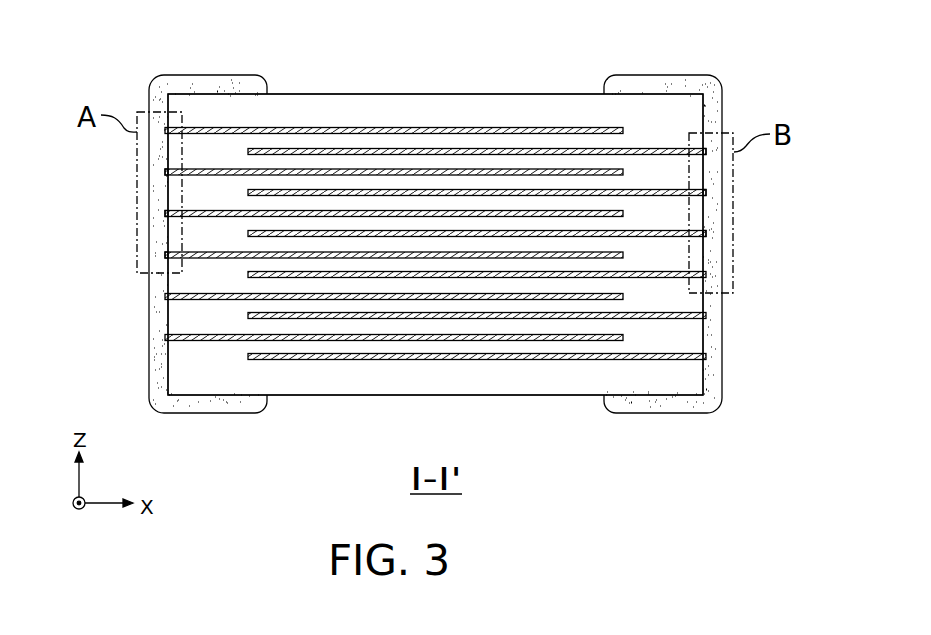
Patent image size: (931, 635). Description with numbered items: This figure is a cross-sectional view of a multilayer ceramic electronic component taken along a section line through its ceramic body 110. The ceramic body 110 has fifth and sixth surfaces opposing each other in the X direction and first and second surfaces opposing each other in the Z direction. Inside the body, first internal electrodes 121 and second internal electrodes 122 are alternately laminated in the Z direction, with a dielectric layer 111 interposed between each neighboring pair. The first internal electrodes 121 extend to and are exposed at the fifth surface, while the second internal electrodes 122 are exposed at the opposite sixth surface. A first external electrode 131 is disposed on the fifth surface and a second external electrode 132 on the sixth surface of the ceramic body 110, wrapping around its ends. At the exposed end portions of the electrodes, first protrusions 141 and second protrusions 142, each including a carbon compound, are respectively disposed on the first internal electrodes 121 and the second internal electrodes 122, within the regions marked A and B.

The ceramic body 110 is at (437, 93).
The dielectric layer 111 is at (503, 378).
The first internal electrode 121 is at (340, 342).
The second internal electrode 122 is at (391, 360).
The first external electrode 131 is at (209, 78).
The second external electrode 132 is at (660, 78).
The first protrusion 141 is at (166, 172).
The second protrusion 142 is at (706, 151).